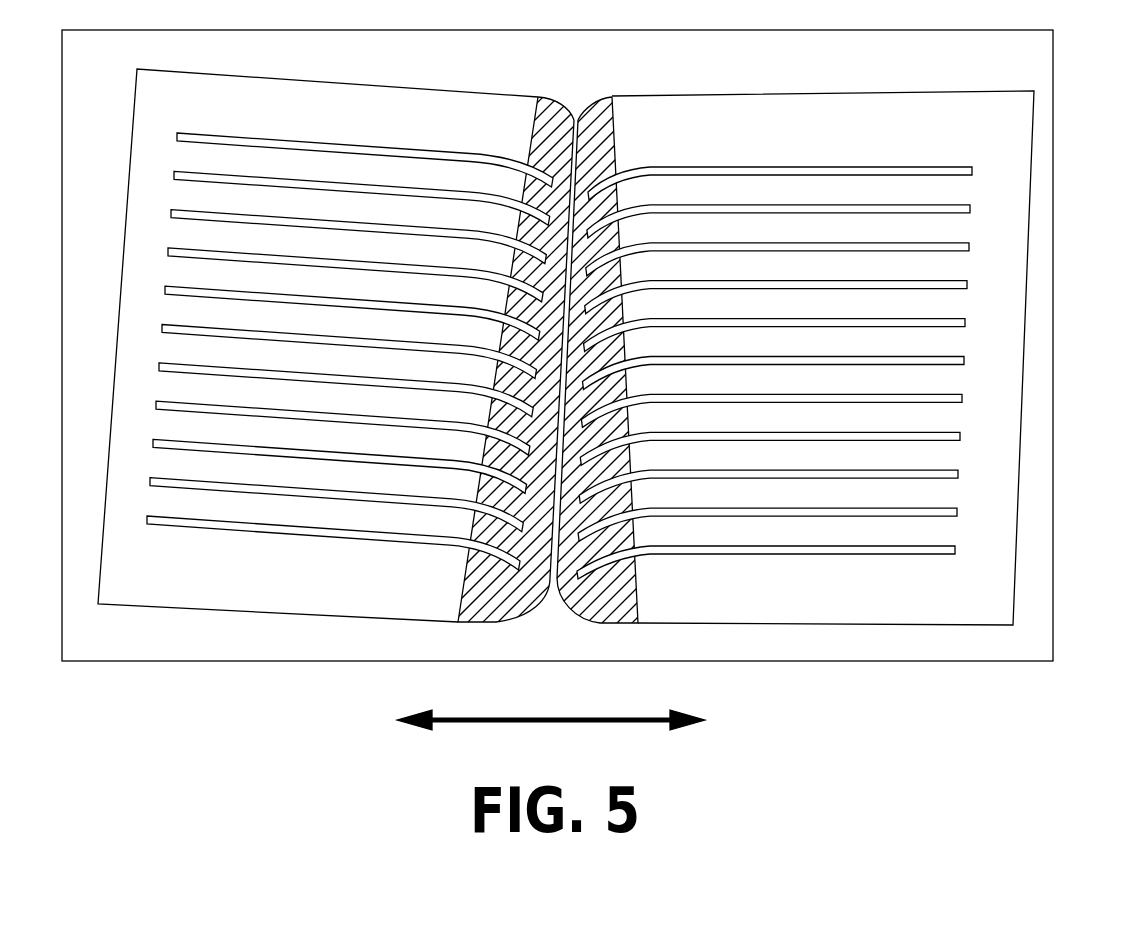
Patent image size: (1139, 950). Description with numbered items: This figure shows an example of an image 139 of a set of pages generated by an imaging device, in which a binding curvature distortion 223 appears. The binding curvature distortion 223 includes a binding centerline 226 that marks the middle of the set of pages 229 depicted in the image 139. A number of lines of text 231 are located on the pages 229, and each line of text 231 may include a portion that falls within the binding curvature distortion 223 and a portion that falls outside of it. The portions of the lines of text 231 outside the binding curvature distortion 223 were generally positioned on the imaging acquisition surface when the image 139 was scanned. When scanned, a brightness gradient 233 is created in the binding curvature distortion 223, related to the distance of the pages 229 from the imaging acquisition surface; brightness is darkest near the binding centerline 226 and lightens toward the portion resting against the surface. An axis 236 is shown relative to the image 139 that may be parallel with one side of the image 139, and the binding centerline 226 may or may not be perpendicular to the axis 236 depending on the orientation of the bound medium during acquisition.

The image 139 is at (1030, 271).
The binding curvature distortion 223 is at (574, 82).
The binding centerline 226 is at (550, 562).
The pages 229 is at (302, 596).
The lines of text 231 is at (768, 156).
The brightness gradient 233 is at (612, 585).
The axis 236 is at (557, 731).